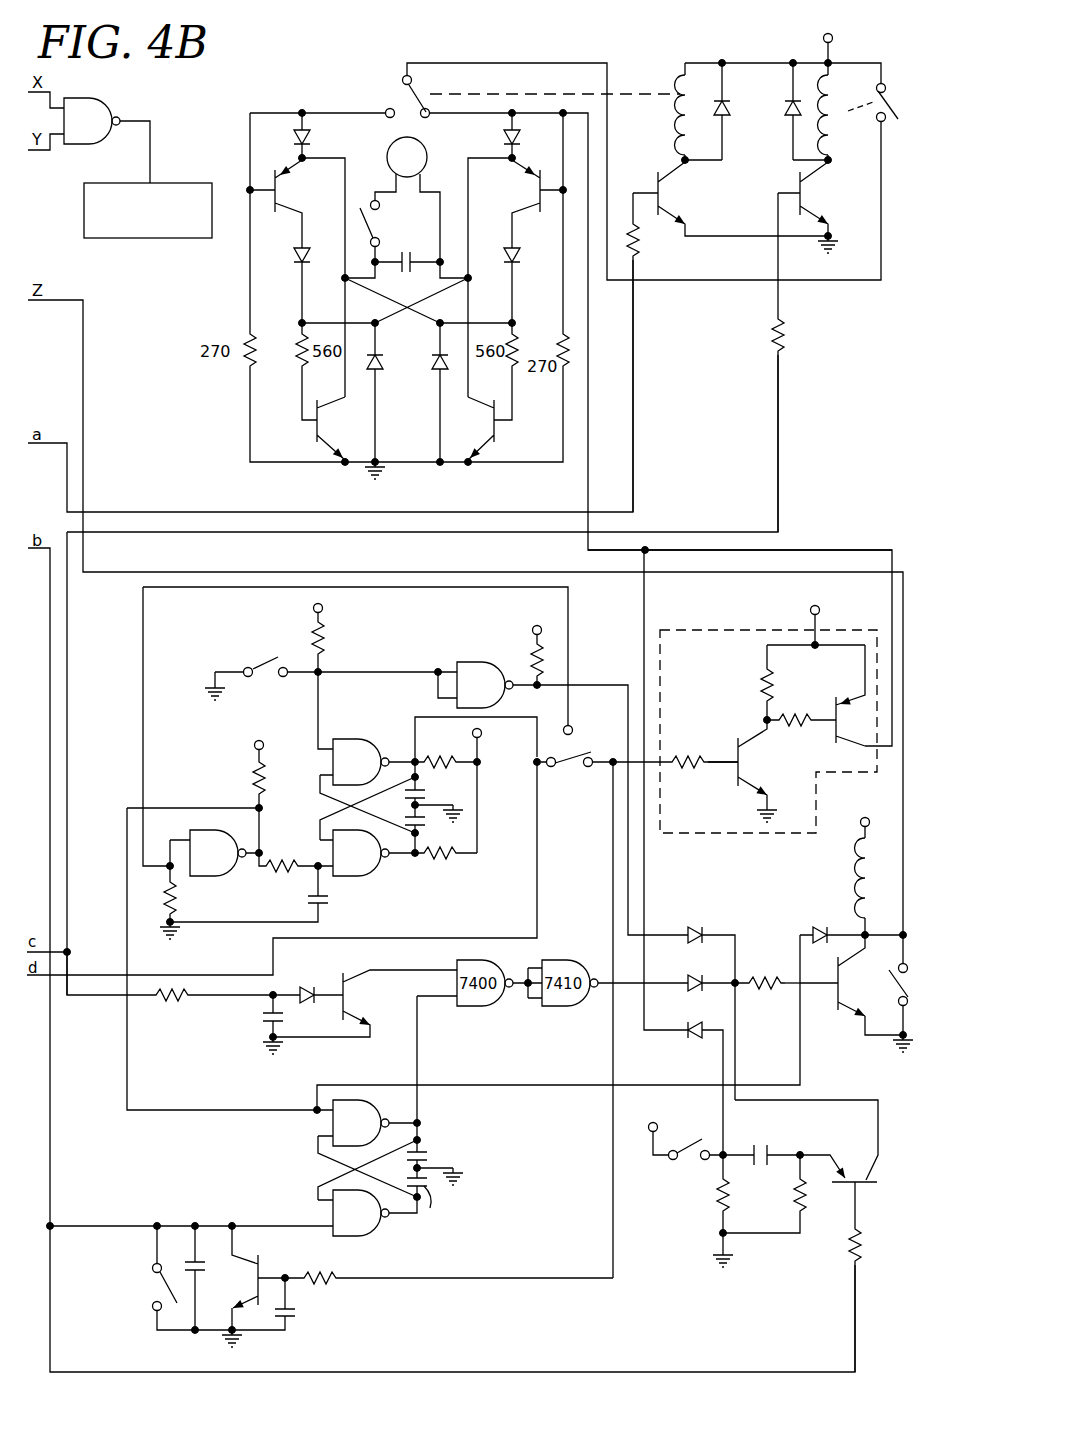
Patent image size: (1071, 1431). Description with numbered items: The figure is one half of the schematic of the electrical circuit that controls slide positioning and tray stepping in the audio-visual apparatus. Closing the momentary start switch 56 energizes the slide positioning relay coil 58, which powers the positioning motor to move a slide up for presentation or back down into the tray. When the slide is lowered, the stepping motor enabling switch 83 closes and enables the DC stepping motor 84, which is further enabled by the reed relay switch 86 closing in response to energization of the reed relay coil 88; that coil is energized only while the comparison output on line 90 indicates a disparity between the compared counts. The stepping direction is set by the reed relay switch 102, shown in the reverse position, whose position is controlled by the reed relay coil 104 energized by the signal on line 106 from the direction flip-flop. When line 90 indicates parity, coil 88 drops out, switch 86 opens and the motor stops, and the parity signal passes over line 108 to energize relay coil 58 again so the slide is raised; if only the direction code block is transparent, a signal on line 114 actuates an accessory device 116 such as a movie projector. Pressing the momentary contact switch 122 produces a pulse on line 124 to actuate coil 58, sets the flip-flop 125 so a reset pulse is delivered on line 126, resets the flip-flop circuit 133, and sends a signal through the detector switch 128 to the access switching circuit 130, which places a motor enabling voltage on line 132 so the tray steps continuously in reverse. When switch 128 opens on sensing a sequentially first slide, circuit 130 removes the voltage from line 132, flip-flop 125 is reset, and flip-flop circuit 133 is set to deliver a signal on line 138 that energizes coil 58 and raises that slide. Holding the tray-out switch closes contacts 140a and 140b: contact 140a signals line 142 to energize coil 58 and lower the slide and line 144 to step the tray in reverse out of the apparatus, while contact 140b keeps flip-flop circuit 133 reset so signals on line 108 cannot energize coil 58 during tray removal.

The line 114 is at (150, 140).
The accessory device 116 is at (172, 238).
The reed relay switch 102 is at (402, 80).
The DC stepping motor 84 is at (424, 145).
The stepping motor enabling switch 83 is at (392, 219).
The reed relay coil 104 is at (679, 112).
The reed relay switch 86 is at (895, 96).
The reed relay coil 88 is at (838, 134).
The line 106 is at (633, 400).
The line 90 is at (778, 423).
The line 132 is at (850, 550).
The momentary contact switch 122 is at (265, 656).
The flip-flop 125 is at (384, 722).
The line 124 is at (602, 683).
The detector switch 128 is at (573, 770).
The line 126 is at (539, 855).
The access switching circuit 130 is at (703, 835).
The slide positioning relay coil 58 is at (858, 884).
The start switch 56 is at (909, 977).
The line 108 is at (88, 995).
The line 138 is at (418, 1043).
The line 144 is at (655, 1032).
The line 142 is at (843, 1100).
The flip-flop circuit 133 is at (314, 1168).
The switch contact 140a is at (688, 1160).
The switch contact 140b is at (160, 1290).